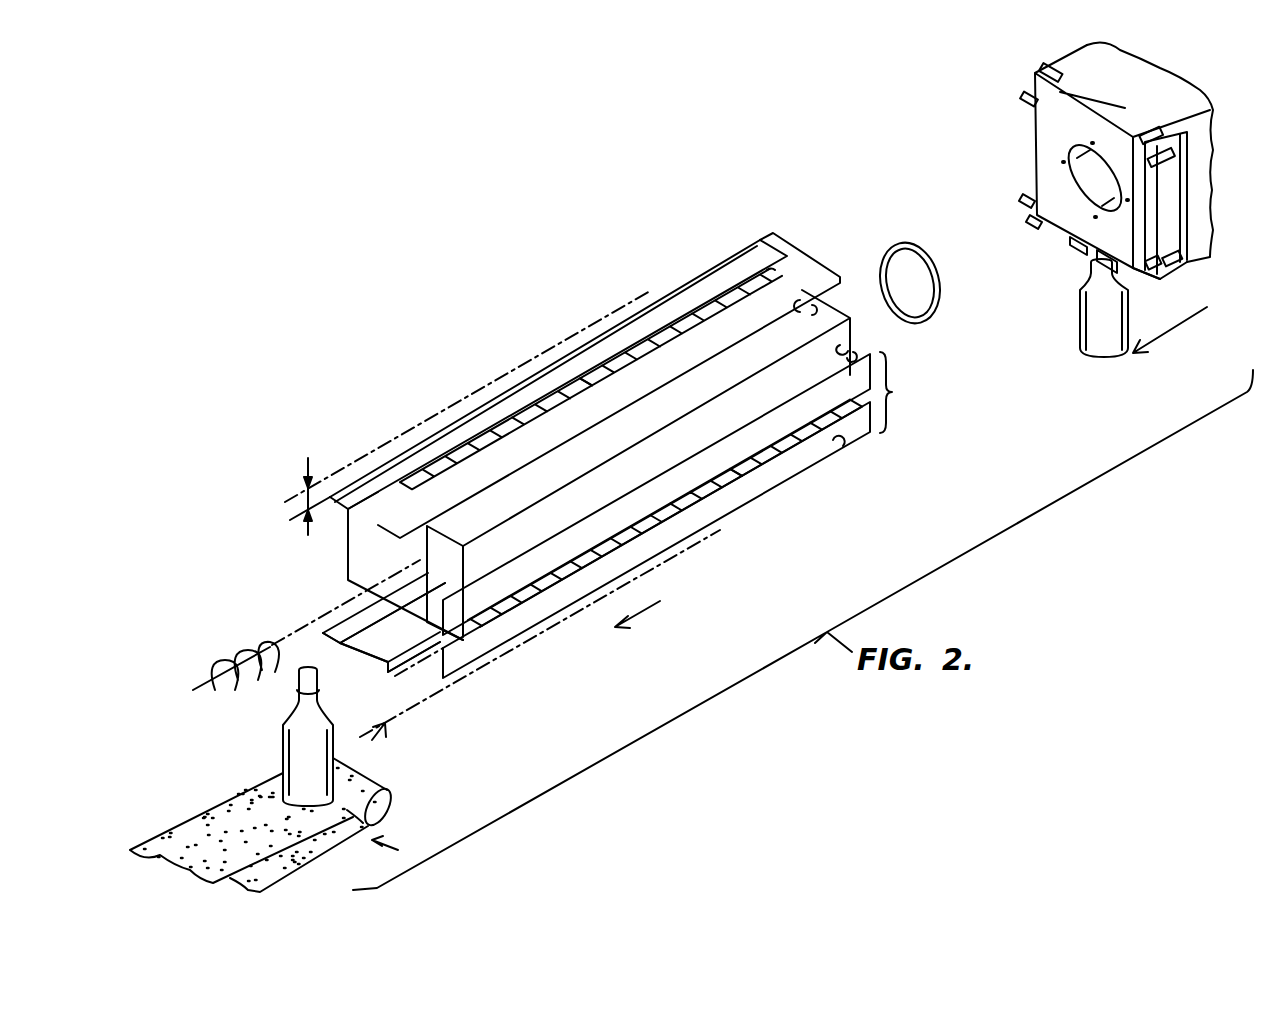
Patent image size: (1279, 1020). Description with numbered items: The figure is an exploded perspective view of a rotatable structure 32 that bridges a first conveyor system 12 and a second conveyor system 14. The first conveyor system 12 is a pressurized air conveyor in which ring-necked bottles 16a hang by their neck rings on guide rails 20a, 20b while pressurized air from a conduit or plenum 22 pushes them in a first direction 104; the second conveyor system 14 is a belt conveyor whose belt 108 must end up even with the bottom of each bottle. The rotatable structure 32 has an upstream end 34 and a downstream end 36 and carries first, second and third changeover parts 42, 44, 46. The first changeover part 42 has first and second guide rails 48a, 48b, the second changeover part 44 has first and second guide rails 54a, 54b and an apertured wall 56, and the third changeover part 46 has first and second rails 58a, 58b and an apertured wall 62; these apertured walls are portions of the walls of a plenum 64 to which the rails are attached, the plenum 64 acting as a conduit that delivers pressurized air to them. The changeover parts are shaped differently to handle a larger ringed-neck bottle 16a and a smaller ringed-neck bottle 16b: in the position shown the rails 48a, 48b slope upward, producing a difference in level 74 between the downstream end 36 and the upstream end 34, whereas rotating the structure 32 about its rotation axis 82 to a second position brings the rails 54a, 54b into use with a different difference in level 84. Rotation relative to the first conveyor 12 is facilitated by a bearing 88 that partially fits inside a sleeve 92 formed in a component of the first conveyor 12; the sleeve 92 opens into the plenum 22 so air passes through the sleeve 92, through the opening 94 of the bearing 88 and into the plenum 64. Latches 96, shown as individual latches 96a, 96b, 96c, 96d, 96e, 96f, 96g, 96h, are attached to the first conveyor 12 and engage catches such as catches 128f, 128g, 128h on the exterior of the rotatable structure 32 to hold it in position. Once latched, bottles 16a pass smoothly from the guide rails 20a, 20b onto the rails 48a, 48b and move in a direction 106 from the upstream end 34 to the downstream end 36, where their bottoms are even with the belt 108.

The first conveyor system 12 is at (1205, 262).
The second conveyor system 14 is at (391, 822).
The ring-necked bottle 16a is at (288, 746).
The smaller ringed-neck bottle 16b is at (1080, 342).
The guide rail 20a is at (1072, 250).
The guide rail 20b is at (1085, 278).
The conduit or plenum 22 is at (1147, 90).
The rotatable structure 32 is at (458, 302).
The upstream end 34 is at (733, 242).
The downstream end 36 is at (348, 548).
The first changeover part 42 is at (360, 652).
The second changeover part 44 is at (803, 256).
The third changeover part 46 is at (893, 390).
The first guide rail 48a is at (330, 643).
The second guide rail 48b is at (385, 678).
The first guide rail 54a is at (622, 330).
The second guide rail 54b is at (668, 362).
The apertured wall 56 is at (583, 378).
The first rail 58a is at (805, 412).
The second rail 58b is at (805, 483).
The apertured wall 62 is at (735, 500).
The plenum 64 is at (628, 437).
The difference in level 74 is at (390, 727).
The rotation axis 82 is at (206, 675).
The difference in level 84 is at (302, 506).
The bearing 88 is at (890, 300).
The sleeve 92 is at (1105, 187).
The opening 94 is at (884, 285).
The latches 96 is at (1200, 204).
The latch 96a is at (1042, 66).
The latch 96b is at (1165, 130).
The latch 96c is at (1180, 160).
The latch 96d is at (1178, 276).
The latch 96e is at (1147, 278).
The latch 96f is at (1028, 225).
The latch 96g is at (1022, 200).
The latch 96h is at (1022, 97).
The first direction 104 is at (1162, 336).
The direction 106 is at (655, 618).
The belt 108 is at (238, 797).
The catch 128f is at (805, 315).
The catch 128g is at (850, 348).
The catch 128h is at (840, 450).